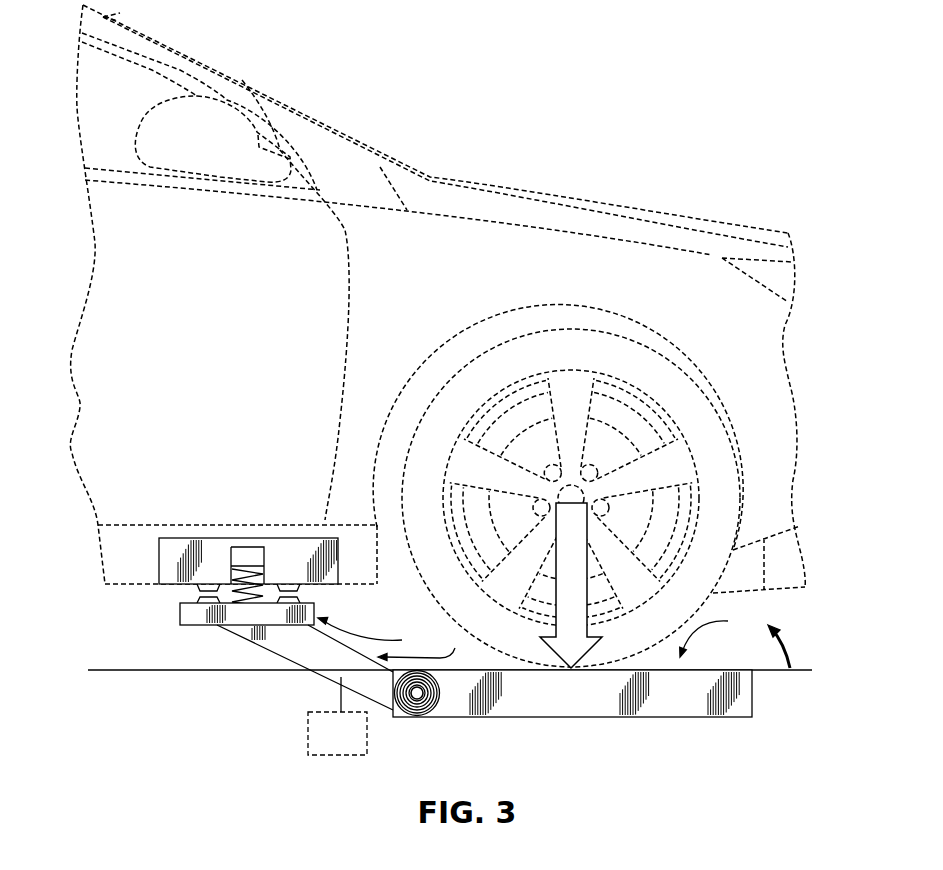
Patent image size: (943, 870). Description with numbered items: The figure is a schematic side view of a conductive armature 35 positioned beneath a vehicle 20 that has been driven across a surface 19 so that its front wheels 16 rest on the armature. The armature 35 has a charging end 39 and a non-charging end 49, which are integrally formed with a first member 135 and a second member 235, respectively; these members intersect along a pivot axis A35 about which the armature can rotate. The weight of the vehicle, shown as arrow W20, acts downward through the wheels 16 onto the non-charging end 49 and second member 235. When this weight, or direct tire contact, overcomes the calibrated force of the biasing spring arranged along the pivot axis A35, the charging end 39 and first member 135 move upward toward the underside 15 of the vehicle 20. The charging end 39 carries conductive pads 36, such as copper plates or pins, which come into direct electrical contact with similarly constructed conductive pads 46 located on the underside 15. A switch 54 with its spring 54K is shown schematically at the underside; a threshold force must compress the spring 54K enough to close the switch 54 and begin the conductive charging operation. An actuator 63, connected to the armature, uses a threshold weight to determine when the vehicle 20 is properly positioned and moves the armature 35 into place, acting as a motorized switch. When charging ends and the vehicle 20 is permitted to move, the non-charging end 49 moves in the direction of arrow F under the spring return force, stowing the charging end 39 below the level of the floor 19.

The vehicle 20 is at (229, 451).
The front wheels 16 is at (803, 524).
The underside 15 is at (327, 592).
The switch 54 is at (242, 558).
The spring 54K is at (248, 562).
The conductive pad 46 is at (207, 581).
The conductive pads 36 is at (207, 603).
The charging end 39 is at (372, 635).
The surface 19 is at (131, 668).
The first member 135 is at (318, 653).
The actuator 63 is at (349, 744).
The conductive armature 35 is at (565, 691).
The pivot axis A35 is at (430, 714).
The second member 235 is at (548, 698).
The non-charging end 49 is at (719, 634).
The direction of movement F is at (789, 644).
The weight of the vehicle W20 is at (587, 574).